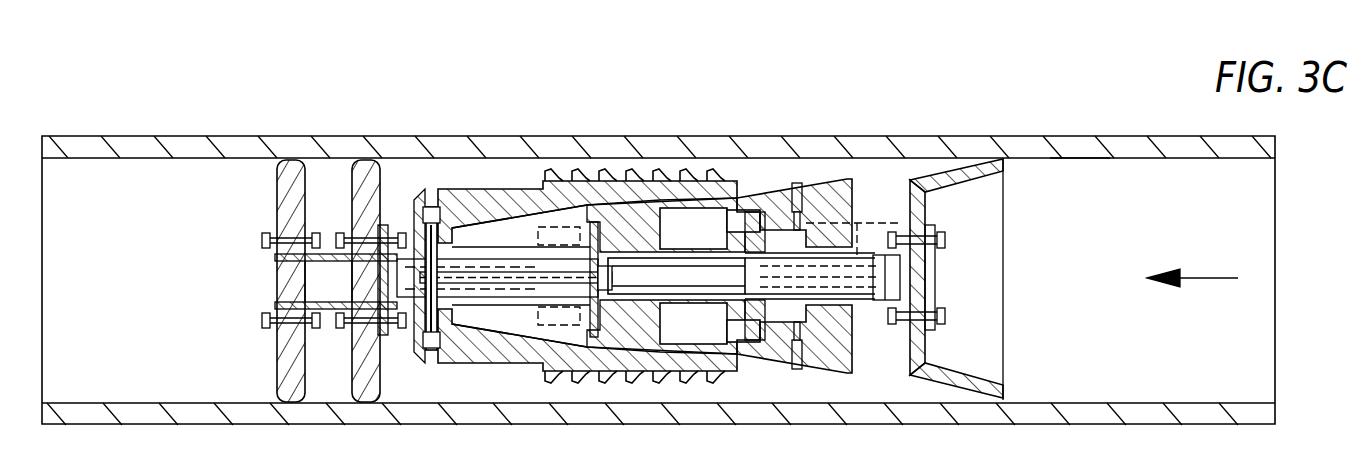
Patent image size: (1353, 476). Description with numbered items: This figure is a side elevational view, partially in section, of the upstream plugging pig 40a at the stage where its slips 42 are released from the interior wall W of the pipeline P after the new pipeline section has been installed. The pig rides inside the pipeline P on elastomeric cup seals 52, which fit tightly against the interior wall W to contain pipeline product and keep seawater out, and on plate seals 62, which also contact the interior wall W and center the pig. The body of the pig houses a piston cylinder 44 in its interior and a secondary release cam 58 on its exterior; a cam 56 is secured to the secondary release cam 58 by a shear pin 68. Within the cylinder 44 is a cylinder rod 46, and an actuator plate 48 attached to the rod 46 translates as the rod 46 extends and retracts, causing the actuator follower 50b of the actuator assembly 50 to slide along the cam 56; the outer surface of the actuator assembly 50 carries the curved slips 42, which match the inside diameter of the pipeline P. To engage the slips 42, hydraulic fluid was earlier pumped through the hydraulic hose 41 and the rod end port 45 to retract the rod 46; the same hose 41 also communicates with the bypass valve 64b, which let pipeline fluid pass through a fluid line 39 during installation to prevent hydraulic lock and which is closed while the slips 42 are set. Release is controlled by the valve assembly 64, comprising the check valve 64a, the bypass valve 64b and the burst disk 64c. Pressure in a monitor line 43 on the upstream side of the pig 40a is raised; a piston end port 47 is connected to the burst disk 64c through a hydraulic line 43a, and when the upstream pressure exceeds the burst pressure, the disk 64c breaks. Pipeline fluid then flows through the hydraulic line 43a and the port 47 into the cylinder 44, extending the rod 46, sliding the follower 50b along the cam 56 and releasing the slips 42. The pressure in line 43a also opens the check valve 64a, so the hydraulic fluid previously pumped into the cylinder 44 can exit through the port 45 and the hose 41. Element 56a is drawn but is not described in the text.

The fluid line 39 is at (538, 312).
The upstream plugging pig 40a is at (470, 185).
The hydraulic hose 41 is at (838, 308).
The slips 42 is at (675, 179).
The monitor line 43 is at (893, 205).
The hydraulic line 43a is at (840, 225).
The piston cylinder 44 is at (640, 292).
The rod end port 45 is at (584, 295).
The cylinder rod 46 is at (565, 290).
The piston end port 47 is at (753, 312).
The actuator plate 48 is at (432, 205).
The actuator assembly 50 is at (488, 215).
The actuator follower 50b is at (528, 225).
The cup seals 52 is at (970, 163).
The cam 56 is at (752, 200).
The pin 56a is at (790, 185).
The secondary release cam 58 is at (708, 318).
The plate seals 62 is at (350, 382).
The valve assembly 64 is at (877, 295).
The check valve 64a is at (895, 272).
The bypass valve 64b is at (910, 296).
The burst disk 64c is at (950, 245).
The shear pin 68 is at (790, 338).
The pipeline P is at (1162, 135).
The interior wall W is at (1078, 160).